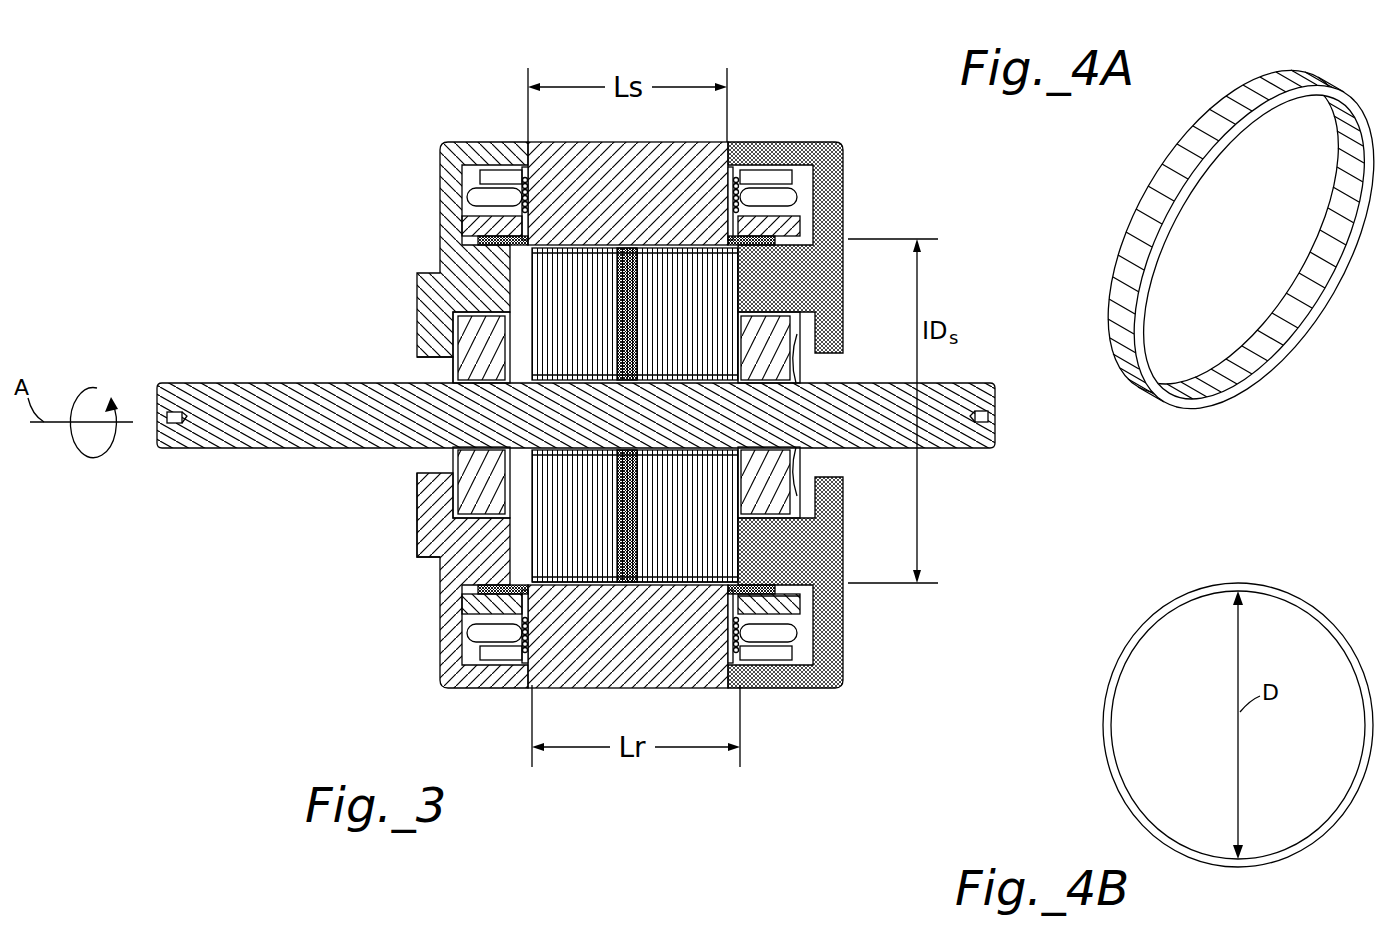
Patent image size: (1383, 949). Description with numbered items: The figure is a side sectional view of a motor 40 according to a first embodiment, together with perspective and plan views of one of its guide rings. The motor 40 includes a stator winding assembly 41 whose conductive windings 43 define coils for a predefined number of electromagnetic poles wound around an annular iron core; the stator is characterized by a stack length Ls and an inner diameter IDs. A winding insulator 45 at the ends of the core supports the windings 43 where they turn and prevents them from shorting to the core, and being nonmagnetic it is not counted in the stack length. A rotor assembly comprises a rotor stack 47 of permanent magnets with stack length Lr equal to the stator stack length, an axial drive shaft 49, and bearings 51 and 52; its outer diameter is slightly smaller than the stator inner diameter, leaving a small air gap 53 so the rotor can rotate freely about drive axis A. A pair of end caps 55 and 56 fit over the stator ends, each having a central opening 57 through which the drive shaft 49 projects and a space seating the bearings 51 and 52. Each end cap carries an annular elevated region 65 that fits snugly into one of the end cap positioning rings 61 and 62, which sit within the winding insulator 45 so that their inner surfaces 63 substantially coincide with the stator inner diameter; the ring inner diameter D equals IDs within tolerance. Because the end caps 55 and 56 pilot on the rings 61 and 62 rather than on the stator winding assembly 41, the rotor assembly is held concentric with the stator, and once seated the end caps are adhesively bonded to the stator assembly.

In FIG. 3, the motor 40 is at (432, 108).
In FIG. 3, the stator winding assembly 41 is at (572, 150).
In FIG. 3, the conductive windings 43 is at (525, 162).
In FIG. 3, the winding insulator 45 is at (478, 192).
In FIG. 3, the rotor stack 47 is at (545, 288).
In FIG. 3, the axial drive shaft 49 is at (207, 386).
In FIG. 3, the bearing 51 is at (468, 323).
In FIG. 3, the bearing 52 is at (800, 320).
In FIG. 3, the air gap 53 is at (580, 588).
In FIG. 3, the end cap 55 is at (425, 545).
In FIG. 3, the end cap 56 is at (828, 572).
In FIG. 3, the central opening 57 is at (422, 371).
In FIG. 3, the end cap positioning ring 61 is at (488, 602).
In FIG. 4A, the end cap positioning ring 61 is at (1221, 239).
In FIG. 4B, the end cap positioning ring 61 is at (1197, 725).
In FIG. 3, the end cap positioning ring 62 is at (768, 604).
In FIG. 4A, the inner surface 63 is at (1278, 310).
In FIG. 4B, the inner surface 63 is at (1118, 762).
In FIG. 3, the annular elevated region 65 is at (490, 262).